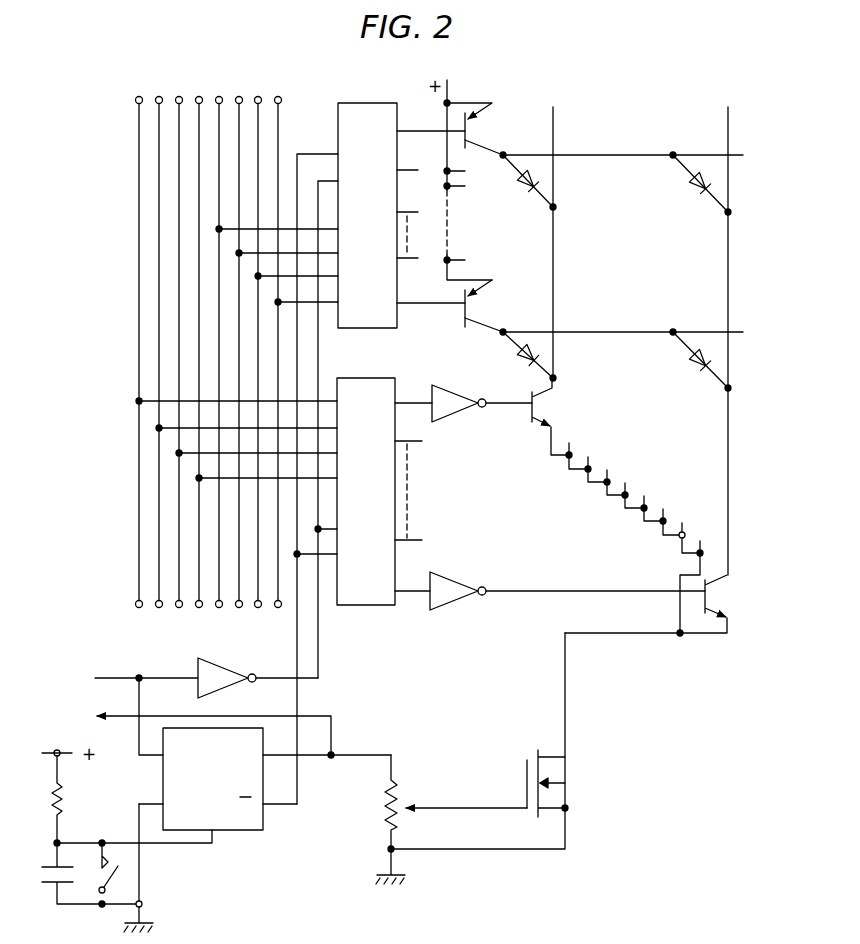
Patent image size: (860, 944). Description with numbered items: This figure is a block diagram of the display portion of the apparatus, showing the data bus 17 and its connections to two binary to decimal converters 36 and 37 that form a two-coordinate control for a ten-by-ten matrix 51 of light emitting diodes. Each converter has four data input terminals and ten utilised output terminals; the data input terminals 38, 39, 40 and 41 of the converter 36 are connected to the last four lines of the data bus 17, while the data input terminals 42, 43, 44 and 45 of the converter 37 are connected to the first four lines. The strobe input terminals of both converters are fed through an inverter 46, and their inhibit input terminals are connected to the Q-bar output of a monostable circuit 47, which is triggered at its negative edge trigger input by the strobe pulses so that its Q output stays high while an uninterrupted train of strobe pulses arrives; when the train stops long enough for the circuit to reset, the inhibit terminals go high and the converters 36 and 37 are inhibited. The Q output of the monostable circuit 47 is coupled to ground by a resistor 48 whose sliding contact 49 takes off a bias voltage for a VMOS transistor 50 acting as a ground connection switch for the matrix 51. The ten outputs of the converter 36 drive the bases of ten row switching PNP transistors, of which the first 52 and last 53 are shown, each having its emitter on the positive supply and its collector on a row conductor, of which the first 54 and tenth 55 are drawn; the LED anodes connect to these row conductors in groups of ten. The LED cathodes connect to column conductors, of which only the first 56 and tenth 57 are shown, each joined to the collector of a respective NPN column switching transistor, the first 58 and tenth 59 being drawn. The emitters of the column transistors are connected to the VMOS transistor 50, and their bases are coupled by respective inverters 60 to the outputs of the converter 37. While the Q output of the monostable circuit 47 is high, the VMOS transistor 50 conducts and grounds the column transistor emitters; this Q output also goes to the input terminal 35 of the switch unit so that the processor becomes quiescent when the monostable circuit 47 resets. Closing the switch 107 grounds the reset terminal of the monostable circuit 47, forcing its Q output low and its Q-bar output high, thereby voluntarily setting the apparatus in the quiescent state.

The data bus 17 is at (283, 90).
The input terminal of the switch unit 35 is at (120, 716).
The binary to decimal converter 36 is at (378, 103).
The binary to decimal converter 37 is at (347, 605).
The data input terminal 38 is at (336, 229).
The data input terminal 39 is at (336, 253).
The data input terminal 40 is at (336, 276).
The data input terminal 41 is at (336, 302).
The data input terminal 42 is at (335, 401).
The data input terminal 43 is at (335, 428).
The data input terminal 44 is at (335, 453).
The data input terminal 45 is at (335, 478).
The inverter 46 is at (222, 674).
The monostable circuit 47 is at (212, 830).
The resistor 48 is at (384, 796).
The sliding contact 49 is at (408, 806).
The VMOS transistor 50 is at (532, 752).
The matrix of light emitting diodes 51 is at (620, 148).
The row switching PNP transistor 52 is at (478, 134).
The row switching PNP transistor 53 is at (480, 305).
The row conductor 54 is at (585, 155).
The row conductor 55 is at (584, 332).
The column conductor 56 is at (556, 112).
The column conductor 57 is at (728, 128).
The NPN column switching transistor 58 is at (552, 410).
The NPN column switching transistor 59 is at (712, 604).
The inverter 60 is at (455, 392).
The switch 107 is at (120, 873).